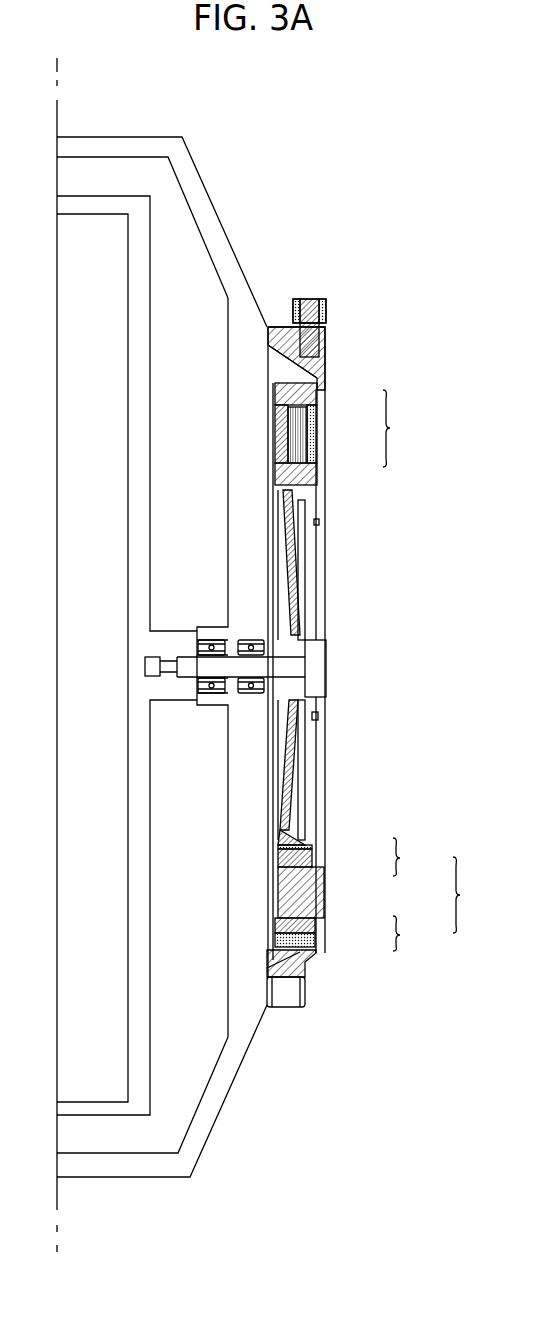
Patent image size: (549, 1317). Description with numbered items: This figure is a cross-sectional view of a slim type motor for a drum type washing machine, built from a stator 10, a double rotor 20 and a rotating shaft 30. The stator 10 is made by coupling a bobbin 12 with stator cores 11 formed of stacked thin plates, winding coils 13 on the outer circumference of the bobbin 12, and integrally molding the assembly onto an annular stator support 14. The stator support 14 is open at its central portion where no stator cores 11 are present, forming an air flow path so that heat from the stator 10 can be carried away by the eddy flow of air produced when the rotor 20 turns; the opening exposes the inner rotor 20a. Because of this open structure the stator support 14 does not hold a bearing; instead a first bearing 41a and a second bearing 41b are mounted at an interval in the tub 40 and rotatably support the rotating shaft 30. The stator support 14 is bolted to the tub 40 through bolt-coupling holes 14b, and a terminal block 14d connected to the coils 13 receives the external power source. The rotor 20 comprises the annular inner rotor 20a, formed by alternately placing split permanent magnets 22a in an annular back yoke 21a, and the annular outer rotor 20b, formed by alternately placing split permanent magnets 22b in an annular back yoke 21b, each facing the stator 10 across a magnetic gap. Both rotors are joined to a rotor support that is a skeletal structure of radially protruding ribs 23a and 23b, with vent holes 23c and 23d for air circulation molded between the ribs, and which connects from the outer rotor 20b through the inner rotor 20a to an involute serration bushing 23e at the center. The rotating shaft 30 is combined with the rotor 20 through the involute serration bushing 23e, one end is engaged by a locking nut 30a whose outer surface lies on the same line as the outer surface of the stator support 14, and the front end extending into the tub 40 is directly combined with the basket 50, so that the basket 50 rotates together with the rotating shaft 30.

The stator 10 is at (401, 428).
The stator cores 11 is at (318, 417).
The bobbin 12 is at (318, 460).
The coils 13 is at (318, 440).
The stator support 14 is at (320, 392).
The bolt-coupling holes 14b is at (305, 989).
The terminal block 14d is at (297, 310).
The rotor 20 is at (382, 895).
The inner rotor 20a is at (415, 857).
The outer rotor 20b is at (415, 933).
The back yoke 21a is at (310, 845).
The back yoke 21b is at (315, 942).
The permanent magnets 22a is at (315, 863).
The permanent magnets 22b is at (315, 922).
The ribs 23a is at (300, 836).
The ribs 23b is at (285, 527).
The vent holes 23c is at (268, 437).
The vent holes 23d is at (290, 557).
The involute serration bushing 23e is at (318, 708).
The rotating shaft 30 is at (145, 666).
The locking nut 30a is at (318, 640).
The tub 40 is at (240, 1020).
The first bearing 41a is at (250, 640).
The second bearing 41b is at (212, 640).
The basket 50 is at (150, 355).